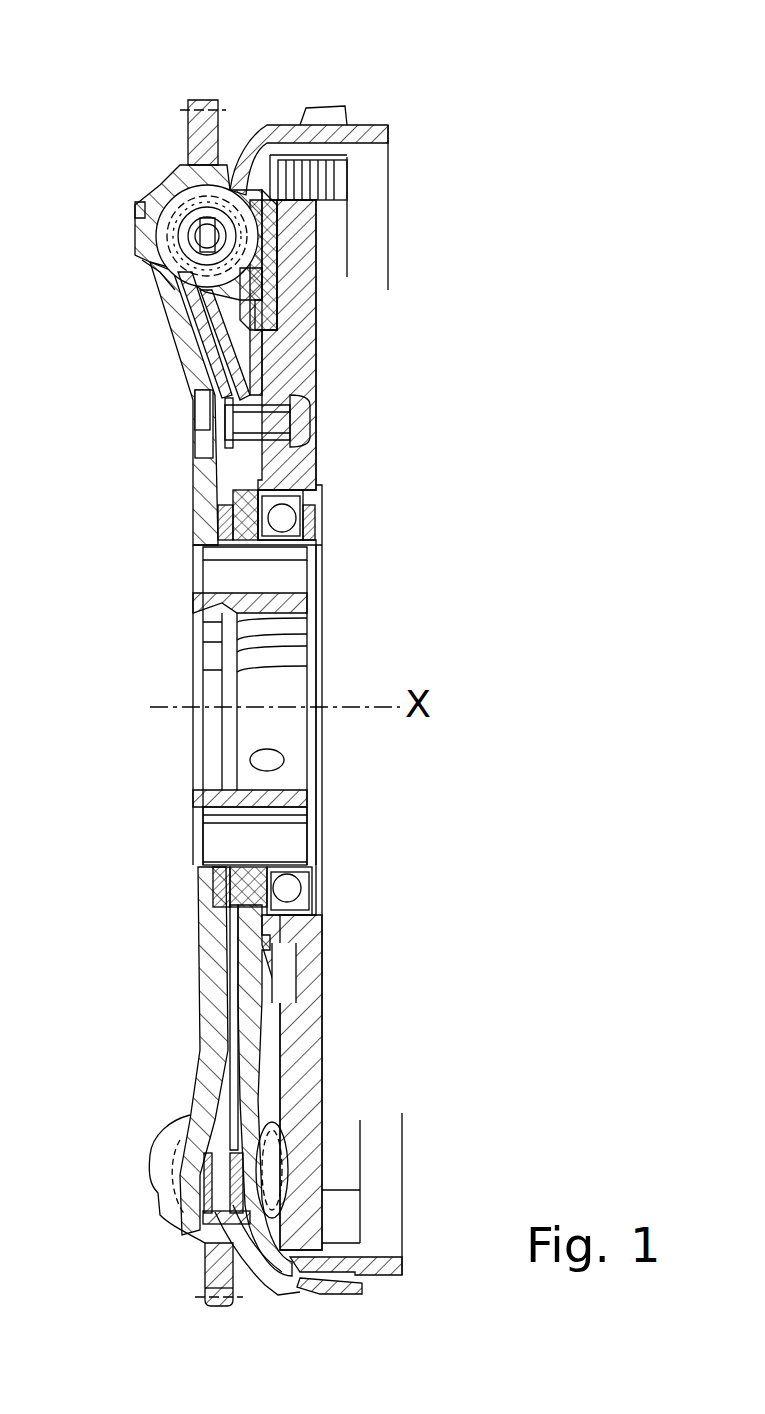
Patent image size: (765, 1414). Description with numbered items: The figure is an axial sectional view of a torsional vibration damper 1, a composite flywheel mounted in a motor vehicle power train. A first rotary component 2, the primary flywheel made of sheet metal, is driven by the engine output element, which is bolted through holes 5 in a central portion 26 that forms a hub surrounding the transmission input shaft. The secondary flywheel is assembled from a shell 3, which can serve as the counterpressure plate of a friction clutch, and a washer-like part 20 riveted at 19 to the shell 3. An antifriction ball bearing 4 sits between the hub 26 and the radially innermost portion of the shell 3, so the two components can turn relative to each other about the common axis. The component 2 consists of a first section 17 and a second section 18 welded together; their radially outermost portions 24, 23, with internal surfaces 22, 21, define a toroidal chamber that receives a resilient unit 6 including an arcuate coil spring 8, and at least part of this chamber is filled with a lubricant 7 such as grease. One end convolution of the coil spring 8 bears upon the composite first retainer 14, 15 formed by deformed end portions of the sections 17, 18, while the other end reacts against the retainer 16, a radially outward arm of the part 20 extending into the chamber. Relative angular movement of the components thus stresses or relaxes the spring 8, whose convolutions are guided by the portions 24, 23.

The torsional vibration damper 1 is at (338, 102).
The first rotary component 2 is at (200, 488).
The shell 3 is at (298, 362).
The antifriction ball bearing 4 is at (284, 518).
The holes 5 is at (215, 843).
The resilient unit 6 is at (150, 253).
The lubricant 7 is at (168, 300).
The arcuate coil spring 8 is at (172, 273).
The first retainer 14 is at (193, 1197).
The first retainer portion 15 is at (267, 1165).
The retainer 16 is at (202, 1162).
The first section 17 is at (217, 1047).
The second section 18 is at (285, 1135).
The rivet 19 is at (275, 412).
The washer-like part 20 is at (253, 993).
The internal surface 21 is at (252, 286).
The internal surface 22 is at (262, 253).
The radially outermost portion 23 is at (266, 216).
The radially outermost portion 24 is at (150, 236).
The central portion 26 is at (226, 614).